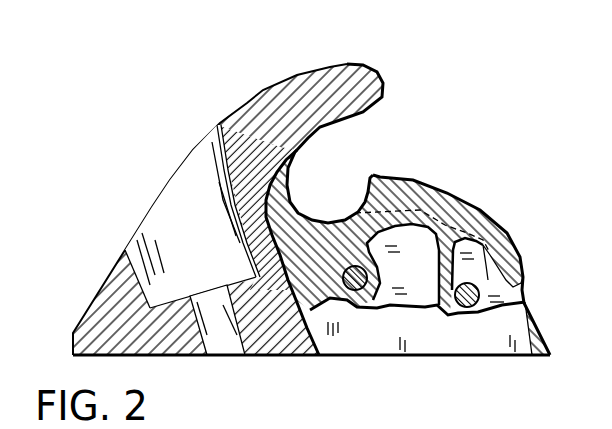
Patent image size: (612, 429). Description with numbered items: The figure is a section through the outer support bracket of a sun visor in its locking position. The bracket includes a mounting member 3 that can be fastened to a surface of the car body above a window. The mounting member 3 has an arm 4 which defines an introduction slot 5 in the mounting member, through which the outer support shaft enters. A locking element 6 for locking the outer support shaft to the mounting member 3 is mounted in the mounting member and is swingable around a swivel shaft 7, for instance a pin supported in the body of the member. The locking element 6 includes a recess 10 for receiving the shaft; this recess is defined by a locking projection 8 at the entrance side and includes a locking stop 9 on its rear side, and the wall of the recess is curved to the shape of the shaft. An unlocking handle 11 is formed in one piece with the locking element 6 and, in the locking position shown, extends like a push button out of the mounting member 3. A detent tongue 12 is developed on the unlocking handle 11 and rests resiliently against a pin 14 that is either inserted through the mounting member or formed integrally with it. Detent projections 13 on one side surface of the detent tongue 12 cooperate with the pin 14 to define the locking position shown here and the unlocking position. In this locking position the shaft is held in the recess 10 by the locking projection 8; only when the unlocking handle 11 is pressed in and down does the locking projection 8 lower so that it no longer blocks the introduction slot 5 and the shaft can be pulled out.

The mounting member 3 is at (312, 347).
The arm 4 is at (355, 80).
The introduction slot 5 is at (377, 85).
The locking element 6 is at (236, 330).
The swivel shaft 7 is at (383, 268).
The locking projection 8 is at (394, 223).
The locking stop 9 is at (265, 165).
The recess 10 is at (345, 209).
The unlocking handle 11 is at (443, 200).
The detent tongue 12 is at (443, 343).
The detent projections 13 is at (438, 294).
The pin 14 is at (498, 256).